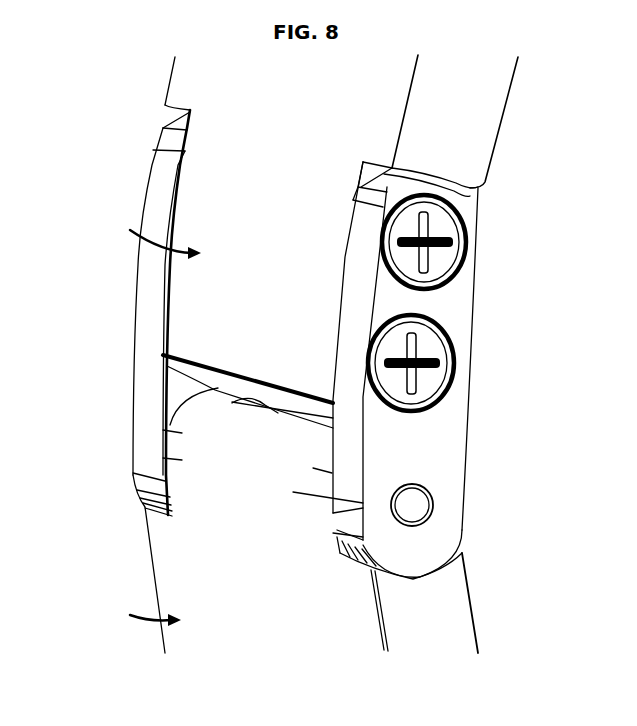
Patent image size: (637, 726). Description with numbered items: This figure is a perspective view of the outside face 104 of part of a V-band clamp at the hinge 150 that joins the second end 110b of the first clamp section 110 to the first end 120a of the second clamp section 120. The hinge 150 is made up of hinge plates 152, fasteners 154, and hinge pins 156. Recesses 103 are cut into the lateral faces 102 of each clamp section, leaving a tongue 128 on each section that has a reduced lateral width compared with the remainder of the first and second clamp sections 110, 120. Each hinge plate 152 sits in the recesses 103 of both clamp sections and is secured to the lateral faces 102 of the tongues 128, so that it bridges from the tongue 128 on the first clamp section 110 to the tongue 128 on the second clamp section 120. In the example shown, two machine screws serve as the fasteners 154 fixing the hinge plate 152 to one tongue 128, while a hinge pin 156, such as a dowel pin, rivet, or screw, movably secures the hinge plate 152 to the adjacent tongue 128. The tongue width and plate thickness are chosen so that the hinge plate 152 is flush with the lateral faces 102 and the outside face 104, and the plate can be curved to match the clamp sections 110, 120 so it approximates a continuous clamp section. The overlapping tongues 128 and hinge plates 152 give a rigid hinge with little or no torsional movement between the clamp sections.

The hinge 150 is at (121, 124).
The hinge plate 152 is at (149, 268).
The fasteners 154 is at (423, 343).
The hinge pin 156 is at (413, 503).
The recess 103 is at (360, 167).
The tongue 128 is at (272, 300).
The first end of second clamp section 120a is at (300, 160).
The second end of first clamp section 110b is at (277, 575).
The outside face 104 is at (142, 417).
The lateral face 102 is at (417, 117).
The second clamp section 120 is at (485, 105).
The first clamp section 110 is at (448, 635).